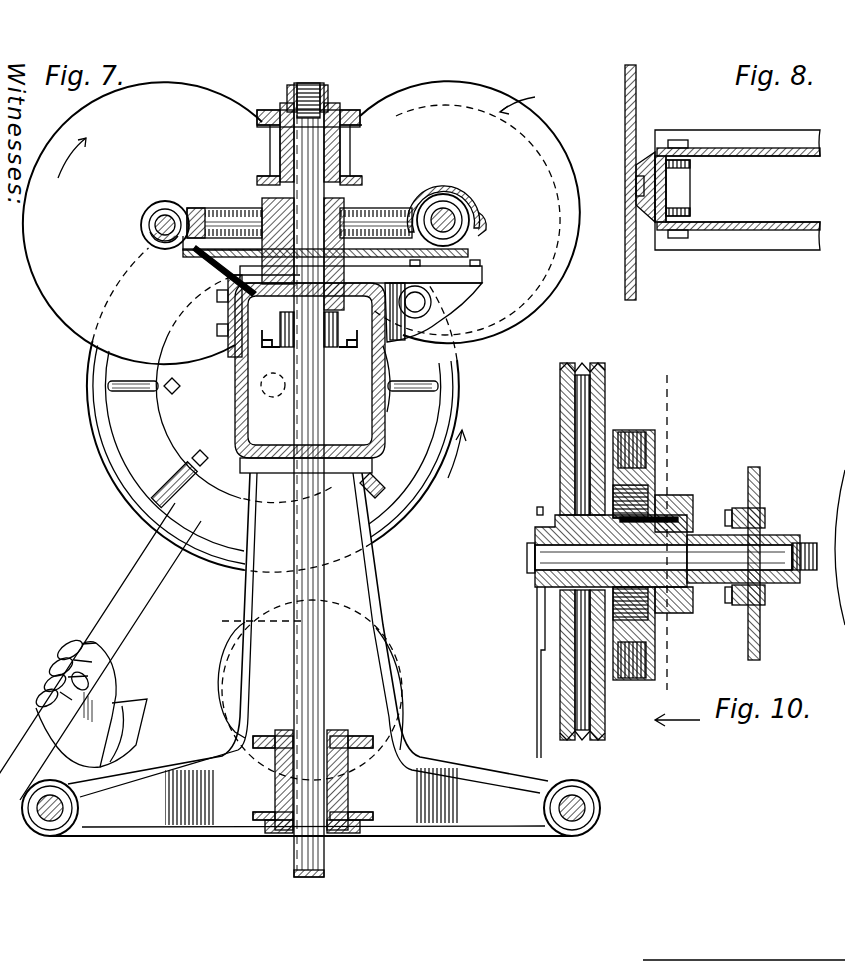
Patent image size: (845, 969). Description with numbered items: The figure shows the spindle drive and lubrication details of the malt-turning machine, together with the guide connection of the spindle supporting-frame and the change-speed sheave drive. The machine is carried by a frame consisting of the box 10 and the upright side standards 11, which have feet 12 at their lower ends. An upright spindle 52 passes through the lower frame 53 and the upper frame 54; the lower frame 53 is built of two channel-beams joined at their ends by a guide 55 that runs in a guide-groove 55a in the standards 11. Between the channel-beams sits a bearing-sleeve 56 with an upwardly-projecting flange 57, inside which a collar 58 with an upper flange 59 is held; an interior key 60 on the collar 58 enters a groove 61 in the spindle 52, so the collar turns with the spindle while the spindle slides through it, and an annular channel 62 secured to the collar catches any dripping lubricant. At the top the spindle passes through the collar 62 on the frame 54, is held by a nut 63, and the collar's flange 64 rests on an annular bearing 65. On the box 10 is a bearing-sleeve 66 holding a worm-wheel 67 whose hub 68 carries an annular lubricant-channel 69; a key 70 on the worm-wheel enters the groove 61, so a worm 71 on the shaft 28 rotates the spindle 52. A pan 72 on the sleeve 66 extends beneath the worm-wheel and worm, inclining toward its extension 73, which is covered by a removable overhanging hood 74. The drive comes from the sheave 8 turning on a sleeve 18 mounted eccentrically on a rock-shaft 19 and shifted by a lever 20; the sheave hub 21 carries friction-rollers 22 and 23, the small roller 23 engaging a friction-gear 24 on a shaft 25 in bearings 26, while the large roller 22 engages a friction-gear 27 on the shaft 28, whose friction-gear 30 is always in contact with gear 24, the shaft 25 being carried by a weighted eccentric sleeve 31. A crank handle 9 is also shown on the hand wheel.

In FIG. 7, the sheave 8 is at (112, 470).
In FIG. 10, the sheave 8 is at (560, 446).
In FIG. 7, the crank arm 9 is at (217, 686).
In FIG. 7, the box 10 is at (380, 428).
In FIG. 10, the box 10 is at (760, 484).
In FIG. 7, the upright side standards 11 is at (365, 648).
In FIG. 8, the upright side standards 11 is at (638, 285).
In FIG. 10, the upright side standards 11 is at (677, 540).
In FIG. 7, the feet 12 is at (311, 802).
In FIG. 10, the sleeve 18 is at (532, 546).
In FIG. 10, the rock-shaft 19 is at (540, 578).
In FIG. 7, the lever 20 is at (103, 650).
In FIG. 10, the lever 20 is at (537, 672).
In FIG. 10, the hub 21 is at (549, 520).
In FIG. 7, the friction-roller 22 is at (190, 443).
In FIG. 10, the friction-roller 22 is at (648, 448).
In FIG. 7, the friction-roller 23 is at (238, 386).
In FIG. 10, the friction-roller 23 is at (680, 495).
In FIG. 7, the friction-gear 24 is at (142, 223).
In FIG. 7, the shaft 25 is at (165, 214).
In FIG. 7, the bearings 26 is at (141, 223).
In FIG. 7, the friction-gear 27 is at (555, 284).
In FIG. 7, the shaft 28 is at (455, 235).
In FIG. 7, the friction-gear 30 is at (547, 302).
In FIG. 7, the eccentric sleeve 31 is at (150, 236).
In FIG. 7, the upright spindles 52 is at (312, 590).
In FIG. 7, the lower frame 53 is at (348, 790).
In FIG. 7, the upper frame 54 is at (350, 160).
In FIG. 8, the guide 55 is at (690, 188).
In FIG. 8, the guide-groove 55a is at (638, 180).
In FIG. 7, the bearing-sleeve 56 is at (340, 742).
In FIG. 7, the upwardly-projecting flange 57 is at (268, 736).
In FIG. 7, the collar 58 is at (278, 786).
In FIG. 7, the flange 59 is at (336, 735).
In FIG. 7, the key 60 is at (290, 730).
In FIG. 7, the groove 61 is at (245, 618).
In FIG. 7, the annular channel 62 is at (268, 140).
In FIG. 7, the nut 63 is at (322, 103).
In FIG. 7, the flange 64 is at (340, 116).
In FIG. 7, the annular bearing 65 is at (356, 126).
In FIG. 7, the bearing-sleeve 66 is at (236, 264).
In FIG. 7, the worm-wheel 67 is at (345, 208).
In FIG. 7, the hub 68 is at (361, 272).
In FIG. 7, the annular lubricant-channel 69 is at (347, 335).
In FIG. 7, the key 70 is at (300, 207).
In FIG. 7, the worms 71 is at (455, 212).
In FIG. 7, the pan 72 is at (230, 275).
In FIG. 7, the extension 73 is at (483, 248).
In FIG. 7, the removable overhanging hood 74 is at (452, 186).